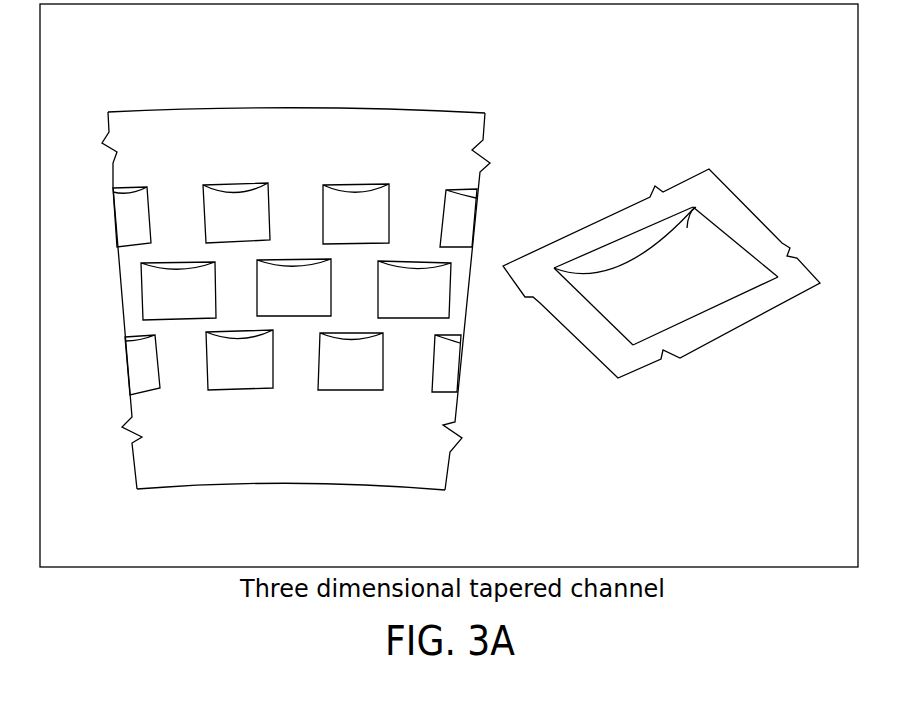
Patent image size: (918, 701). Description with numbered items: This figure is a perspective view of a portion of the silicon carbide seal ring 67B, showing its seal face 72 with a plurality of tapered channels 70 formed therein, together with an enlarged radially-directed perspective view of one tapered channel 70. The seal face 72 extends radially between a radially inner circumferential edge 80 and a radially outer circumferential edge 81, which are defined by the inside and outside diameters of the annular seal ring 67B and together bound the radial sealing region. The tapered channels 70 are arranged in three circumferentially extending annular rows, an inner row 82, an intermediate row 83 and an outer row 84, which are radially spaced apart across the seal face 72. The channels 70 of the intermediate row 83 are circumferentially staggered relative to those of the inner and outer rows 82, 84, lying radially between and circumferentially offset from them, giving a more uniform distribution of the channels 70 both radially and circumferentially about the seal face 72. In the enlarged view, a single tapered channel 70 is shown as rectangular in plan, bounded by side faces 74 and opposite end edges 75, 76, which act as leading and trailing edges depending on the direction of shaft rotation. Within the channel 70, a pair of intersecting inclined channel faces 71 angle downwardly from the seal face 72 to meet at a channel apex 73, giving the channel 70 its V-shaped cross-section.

The silicon carbide seal ring 67B is at (306, 285).
The tapered channel 70 is at (238, 206).
The inclined channel face 71 is at (592, 284).
The seal face 72 is at (168, 104).
The channel apex 73 is at (683, 310).
The side face 74 is at (700, 212).
The end edge 75 is at (742, 253).
The end edge 76 is at (617, 330).
The radially inner circumferential edge 80 is at (193, 488).
The radially outer circumferential edge 81 is at (381, 108).
The inner row 82 is at (114, 362).
The intermediate row 83 is at (108, 299).
The outer row 84 is at (106, 218).